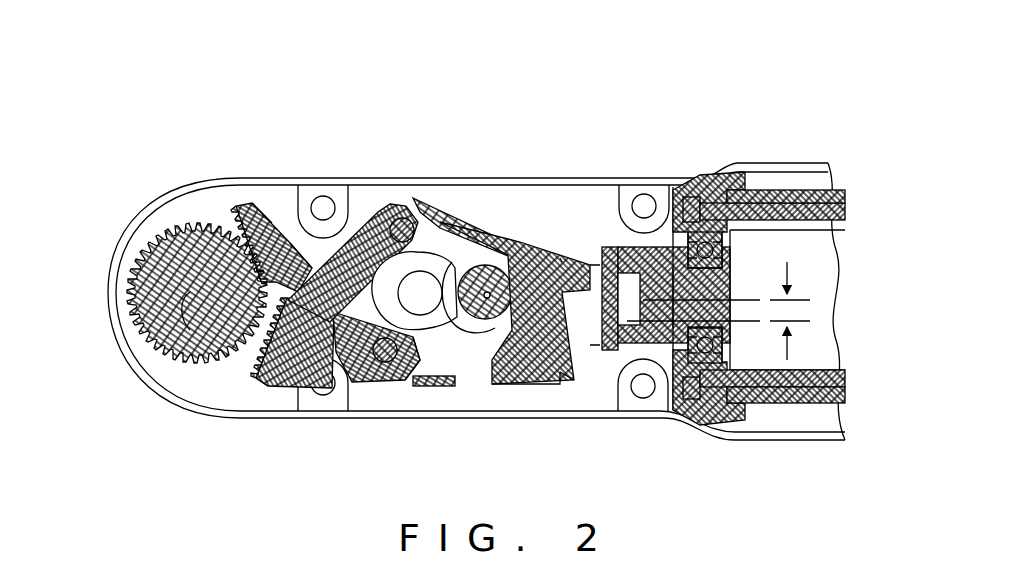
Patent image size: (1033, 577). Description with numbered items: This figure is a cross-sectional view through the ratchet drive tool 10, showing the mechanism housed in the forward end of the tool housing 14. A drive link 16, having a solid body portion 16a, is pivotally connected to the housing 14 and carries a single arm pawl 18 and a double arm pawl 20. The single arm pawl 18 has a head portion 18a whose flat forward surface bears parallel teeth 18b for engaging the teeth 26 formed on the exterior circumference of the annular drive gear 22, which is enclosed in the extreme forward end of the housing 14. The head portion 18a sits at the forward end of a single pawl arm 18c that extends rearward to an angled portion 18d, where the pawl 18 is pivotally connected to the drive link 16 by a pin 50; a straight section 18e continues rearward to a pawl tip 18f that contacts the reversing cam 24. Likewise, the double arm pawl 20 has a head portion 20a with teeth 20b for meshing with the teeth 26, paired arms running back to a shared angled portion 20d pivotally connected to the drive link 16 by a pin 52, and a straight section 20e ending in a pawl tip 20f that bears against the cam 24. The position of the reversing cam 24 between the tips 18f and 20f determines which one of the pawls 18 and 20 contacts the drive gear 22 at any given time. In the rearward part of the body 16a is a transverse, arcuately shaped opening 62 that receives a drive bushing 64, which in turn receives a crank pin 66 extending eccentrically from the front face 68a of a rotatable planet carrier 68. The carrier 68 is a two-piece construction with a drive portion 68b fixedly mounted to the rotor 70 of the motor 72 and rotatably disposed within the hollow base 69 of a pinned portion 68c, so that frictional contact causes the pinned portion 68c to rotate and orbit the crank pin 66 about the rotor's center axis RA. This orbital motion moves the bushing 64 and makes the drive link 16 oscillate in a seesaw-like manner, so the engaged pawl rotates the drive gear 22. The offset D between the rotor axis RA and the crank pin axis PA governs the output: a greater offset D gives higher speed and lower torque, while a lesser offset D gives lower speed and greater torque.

The tool 10 is at (395, 75).
The tool housing 14 is at (168, 187).
The drive link 16 is at (517, 390).
The solid body portion 16a is at (548, 382).
The single arm pawl 18 is at (258, 271).
The head portion 18a is at (270, 200).
The teeth 18b is at (248, 222).
The single pawl arm 18c is at (331, 225).
The angled portion 18d is at (412, 382).
The straight section 18e is at (444, 378).
The pawl tip 18f is at (475, 387).
The double arm pawl 20 is at (352, 282).
The head portion 20a is at (295, 382).
The teeth 20b is at (262, 392).
The angled portion 20d is at (388, 208).
The straight section 20e is at (424, 198).
The pawl tip 20f is at (478, 262).
The annular drive gear 22 is at (203, 348).
The reversing cam 24 is at (498, 264).
The teeth 26 is at (134, 290).
The pin 50 is at (383, 362).
The pin 52 is at (402, 218).
The arcuately shaped opening 62 is at (545, 262).
The drive bushing 64 is at (608, 352).
The crank pin 66 is at (632, 345).
The planet carrier 68 is at (715, 293).
The front face 68a is at (585, 245).
The drive portion 68b is at (658, 382).
The pinned portion 68c is at (676, 398).
The base 69 is at (618, 243).
The rotor 70 is at (690, 197).
The motor 72 is at (811, 170).
The center axis of the crank pin PA is at (562, 260).
The center axis of the rotor RA is at (785, 247).
The offset D is at (708, 311).